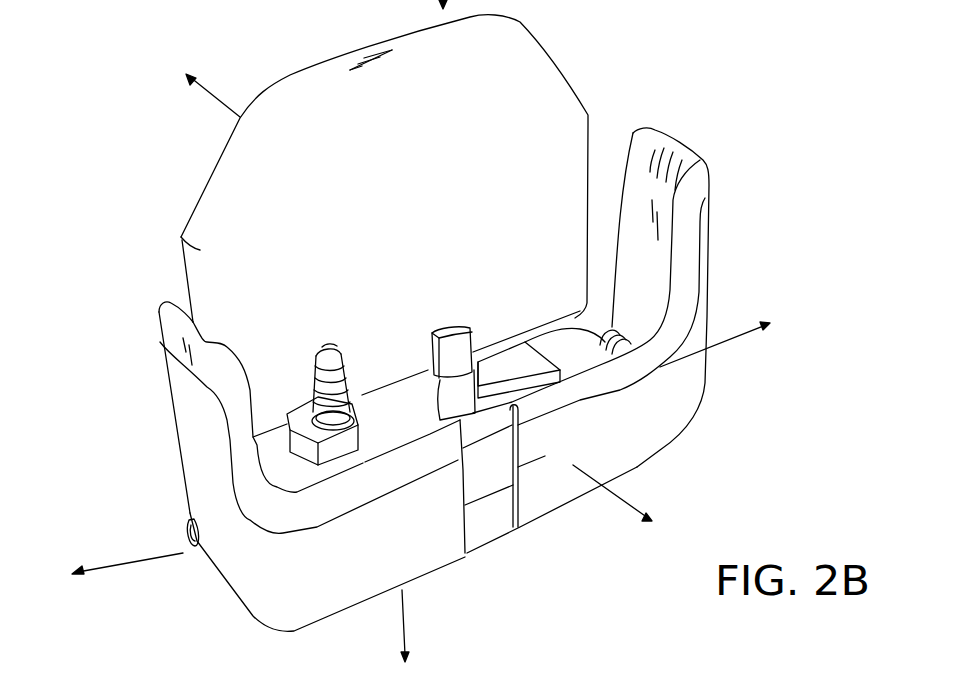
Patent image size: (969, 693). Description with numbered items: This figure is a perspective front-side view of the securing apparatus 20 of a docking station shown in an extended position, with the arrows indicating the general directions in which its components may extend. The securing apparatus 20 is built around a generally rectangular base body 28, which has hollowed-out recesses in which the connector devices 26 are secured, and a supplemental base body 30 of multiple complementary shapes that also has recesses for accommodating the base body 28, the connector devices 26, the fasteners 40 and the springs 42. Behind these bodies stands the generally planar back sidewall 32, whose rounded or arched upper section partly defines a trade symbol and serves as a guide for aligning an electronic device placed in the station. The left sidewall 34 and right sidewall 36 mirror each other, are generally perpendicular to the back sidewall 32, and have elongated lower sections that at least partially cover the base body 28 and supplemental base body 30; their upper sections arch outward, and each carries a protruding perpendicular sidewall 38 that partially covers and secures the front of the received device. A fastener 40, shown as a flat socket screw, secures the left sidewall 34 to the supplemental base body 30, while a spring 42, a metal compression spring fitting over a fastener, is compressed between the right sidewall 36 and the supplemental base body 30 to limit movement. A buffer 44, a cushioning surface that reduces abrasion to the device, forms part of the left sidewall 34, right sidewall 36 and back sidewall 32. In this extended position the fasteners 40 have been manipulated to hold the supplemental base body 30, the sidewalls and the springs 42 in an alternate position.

The securing apparatus 20 is at (98, 136).
The connector devices 26 is at (447, 353).
The base body 28 is at (497, 365).
The supplemental base body 30 is at (562, 340).
The back sidewall 32 is at (531, 68).
The left sidewall 34 is at (188, 462).
The right sidewall 36 is at (701, 263).
The perpendicular sidewall 38 is at (680, 255).
The fastener 40 is at (193, 538).
The spring 42 is at (618, 325).
The buffer 44 is at (655, 215).